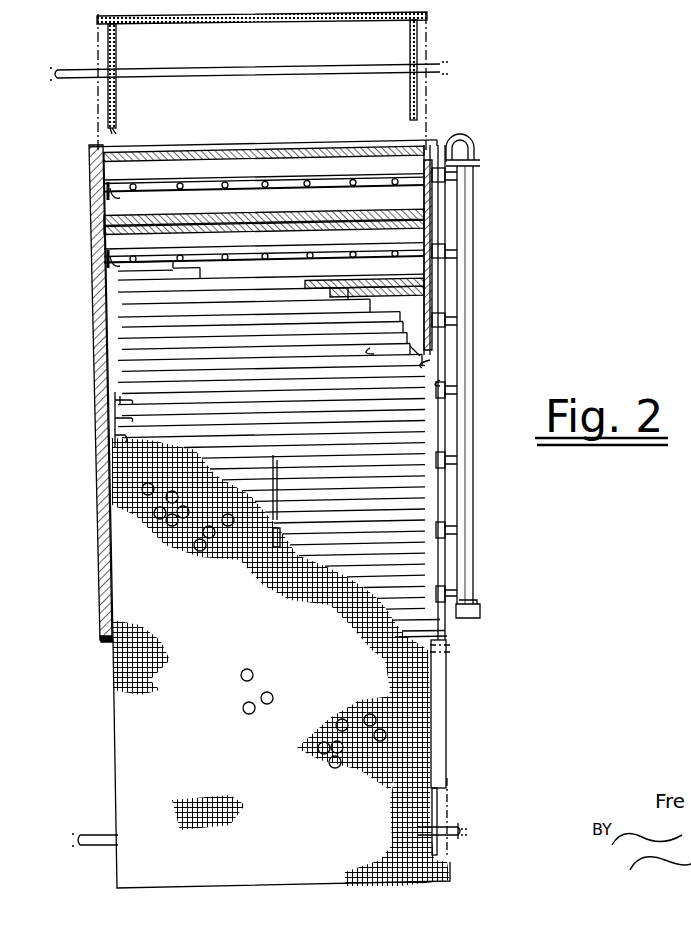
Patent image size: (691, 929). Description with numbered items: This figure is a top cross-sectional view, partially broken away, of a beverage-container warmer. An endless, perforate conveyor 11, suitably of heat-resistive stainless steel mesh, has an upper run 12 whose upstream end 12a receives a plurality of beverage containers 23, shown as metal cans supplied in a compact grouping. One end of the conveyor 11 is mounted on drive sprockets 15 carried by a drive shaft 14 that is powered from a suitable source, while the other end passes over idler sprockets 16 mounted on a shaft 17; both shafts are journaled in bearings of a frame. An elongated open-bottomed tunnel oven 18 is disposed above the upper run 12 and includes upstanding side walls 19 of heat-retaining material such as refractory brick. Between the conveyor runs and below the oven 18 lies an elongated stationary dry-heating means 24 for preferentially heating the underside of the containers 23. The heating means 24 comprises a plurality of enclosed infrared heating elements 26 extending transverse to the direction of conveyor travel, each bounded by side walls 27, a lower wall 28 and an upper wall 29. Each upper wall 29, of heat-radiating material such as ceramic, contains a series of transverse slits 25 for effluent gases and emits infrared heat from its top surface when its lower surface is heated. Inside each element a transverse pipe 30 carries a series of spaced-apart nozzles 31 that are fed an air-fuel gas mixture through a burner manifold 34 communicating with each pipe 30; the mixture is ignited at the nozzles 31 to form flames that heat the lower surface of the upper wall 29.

The endless perforate conveyor 11 is at (114, 696).
The upper run 12 is at (312, 612).
The upstream end of upper run 12a is at (166, 792).
The drive shaft 14 is at (429, 63).
The drive sprockets 15 is at (116, 106).
The idler sprockets 16 is at (438, 816).
The shaft 17 is at (454, 840).
The tunnel oven 18 is at (102, 652).
The side walls 19 is at (100, 528).
The beverage containers 23 is at (324, 764).
The dry-heating means 24 is at (316, 158).
The transverse slits 25 is at (108, 426).
The infrared heating elements 26 is at (98, 208).
The side walls 27 is at (108, 173).
The lower wall 28 is at (332, 209).
The upper wall 29 is at (108, 378).
The transverse pipe 30 is at (388, 184).
The nozzles 31 is at (267, 194).
The burner manifold 34 is at (475, 284).